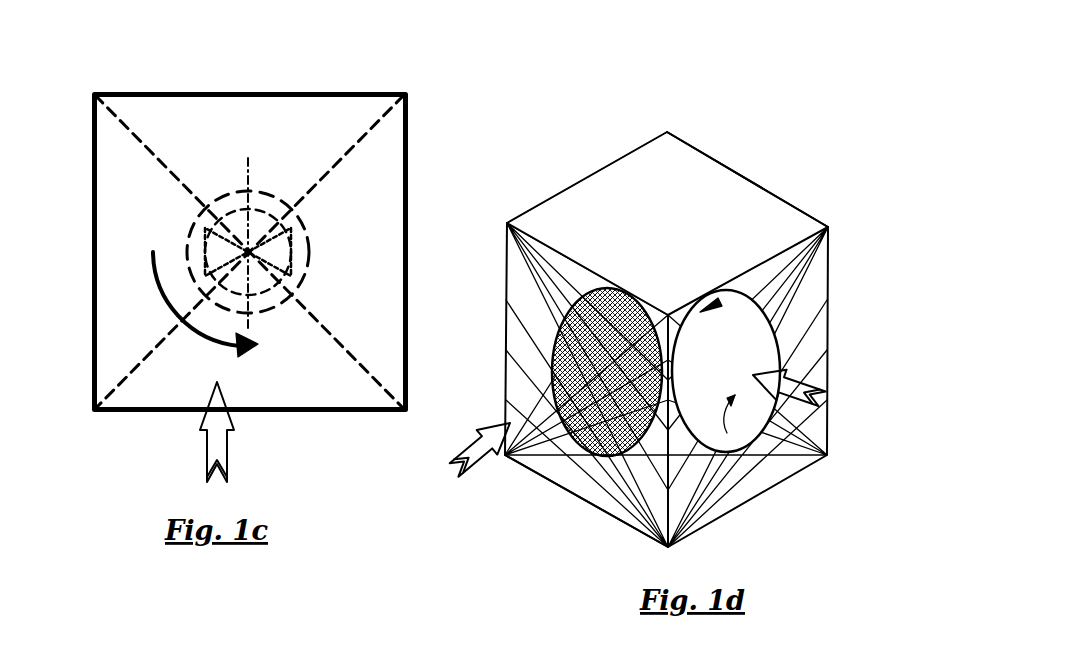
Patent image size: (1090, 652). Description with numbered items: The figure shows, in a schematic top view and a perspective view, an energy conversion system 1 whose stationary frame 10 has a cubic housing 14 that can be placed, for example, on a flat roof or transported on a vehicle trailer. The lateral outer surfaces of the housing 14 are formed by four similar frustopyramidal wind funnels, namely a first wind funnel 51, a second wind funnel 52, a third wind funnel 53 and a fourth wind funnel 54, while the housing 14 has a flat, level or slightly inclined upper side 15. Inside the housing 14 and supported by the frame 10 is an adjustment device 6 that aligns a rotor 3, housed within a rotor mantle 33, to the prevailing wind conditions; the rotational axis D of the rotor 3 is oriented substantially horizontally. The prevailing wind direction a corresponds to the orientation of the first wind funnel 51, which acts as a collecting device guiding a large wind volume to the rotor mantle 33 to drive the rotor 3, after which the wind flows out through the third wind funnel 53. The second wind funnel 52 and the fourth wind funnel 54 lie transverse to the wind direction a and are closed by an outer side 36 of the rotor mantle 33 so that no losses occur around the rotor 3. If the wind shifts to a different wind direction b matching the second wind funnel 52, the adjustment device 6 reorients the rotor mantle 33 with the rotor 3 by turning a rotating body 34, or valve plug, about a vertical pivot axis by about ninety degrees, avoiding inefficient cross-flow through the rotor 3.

In FIG. 1C, the energy conversion system 1 is at (128, 87).
In FIG. 1D, the energy conversion system 1 is at (616, 130).
In FIG. 1C, the rotational axis D is at (243, 187).
In FIG. 1C, the third wind funnel 53 is at (300, 115).
In FIG. 1C, the fourth wind funnel 54 is at (375, 207).
In FIG. 1C, the second wind funnel 52 is at (100, 228).
In FIG. 1D, the second wind funnel 52 is at (588, 472).
In FIG. 1C, the rotor mantle 33 is at (293, 235).
In FIG. 1D, the rotor mantle 33 is at (755, 427).
In FIG. 1C, the rotating body 34 is at (310, 257).
In FIG. 1C, the cubic housing 14 is at (410, 337).
In FIG. 1D, the cubic housing 14 is at (688, 223).
In FIG. 1C, the adjustment device 6 is at (183, 280).
In FIG. 1D, the adjustment device 6 is at (556, 375).
In FIG. 1C, the stationary frame 10 is at (120, 392).
In FIG. 1D, the stationary frame 10 is at (505, 465).
In FIG. 1C, the prevailing wind direction a is at (210, 437).
In FIG. 1D, the prevailing wind direction a is at (800, 397).
In FIG. 1C, the first wind funnel 51 is at (245, 380).
In FIG. 1D, the first wind funnel 51 is at (732, 478).
In FIG. 1D, the upper side 15 is at (745, 178).
In FIG. 1D, the rotor 3 is at (703, 367).
In FIG. 1D, the outer side 36 is at (560, 320).
In FIG. 1D, the different wind direction b is at (457, 446).